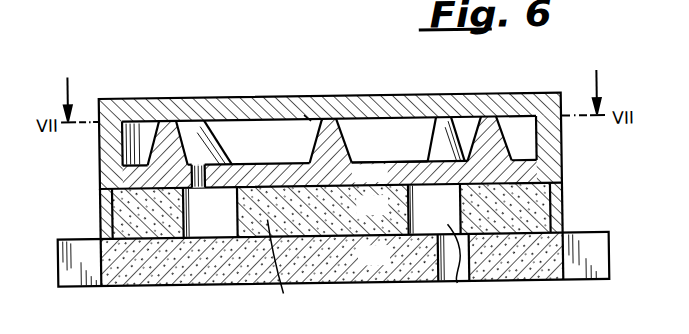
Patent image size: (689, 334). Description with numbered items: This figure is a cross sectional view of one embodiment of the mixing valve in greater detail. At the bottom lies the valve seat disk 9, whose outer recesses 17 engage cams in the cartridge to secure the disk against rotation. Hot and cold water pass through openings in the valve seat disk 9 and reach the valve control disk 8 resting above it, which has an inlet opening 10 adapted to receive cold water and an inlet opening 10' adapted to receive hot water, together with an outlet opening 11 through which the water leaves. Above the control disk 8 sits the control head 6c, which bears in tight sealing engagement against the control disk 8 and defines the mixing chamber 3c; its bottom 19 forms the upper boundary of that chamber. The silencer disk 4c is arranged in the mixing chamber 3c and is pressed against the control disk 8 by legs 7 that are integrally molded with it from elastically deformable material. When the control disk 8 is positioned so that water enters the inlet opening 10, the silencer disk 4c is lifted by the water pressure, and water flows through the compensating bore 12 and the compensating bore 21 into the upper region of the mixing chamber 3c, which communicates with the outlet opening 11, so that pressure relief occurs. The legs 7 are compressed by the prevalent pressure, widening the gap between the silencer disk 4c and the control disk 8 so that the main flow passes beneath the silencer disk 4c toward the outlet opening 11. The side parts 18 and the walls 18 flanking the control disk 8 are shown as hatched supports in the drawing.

The control head 6c is at (378, 100).
The legs 7 is at (212, 122).
The bottom of the control head 19 is at (315, 124).
The compensating bore 12 is at (204, 165).
The mixing chamber 3c is at (389, 144).
The compensating bore 21 is at (425, 165).
The silencing disk 4c is at (330, 174).
The valve control disk 8 is at (331, 211).
The side walls 18 is at (101, 200).
The inlet opening 10 is at (212, 257).
The inlet opening 10' is at (278, 272).
The outlet opening 11 is at (456, 288).
The valve seat disk 9 is at (334, 259).
The recesses 17 is at (98, 279).